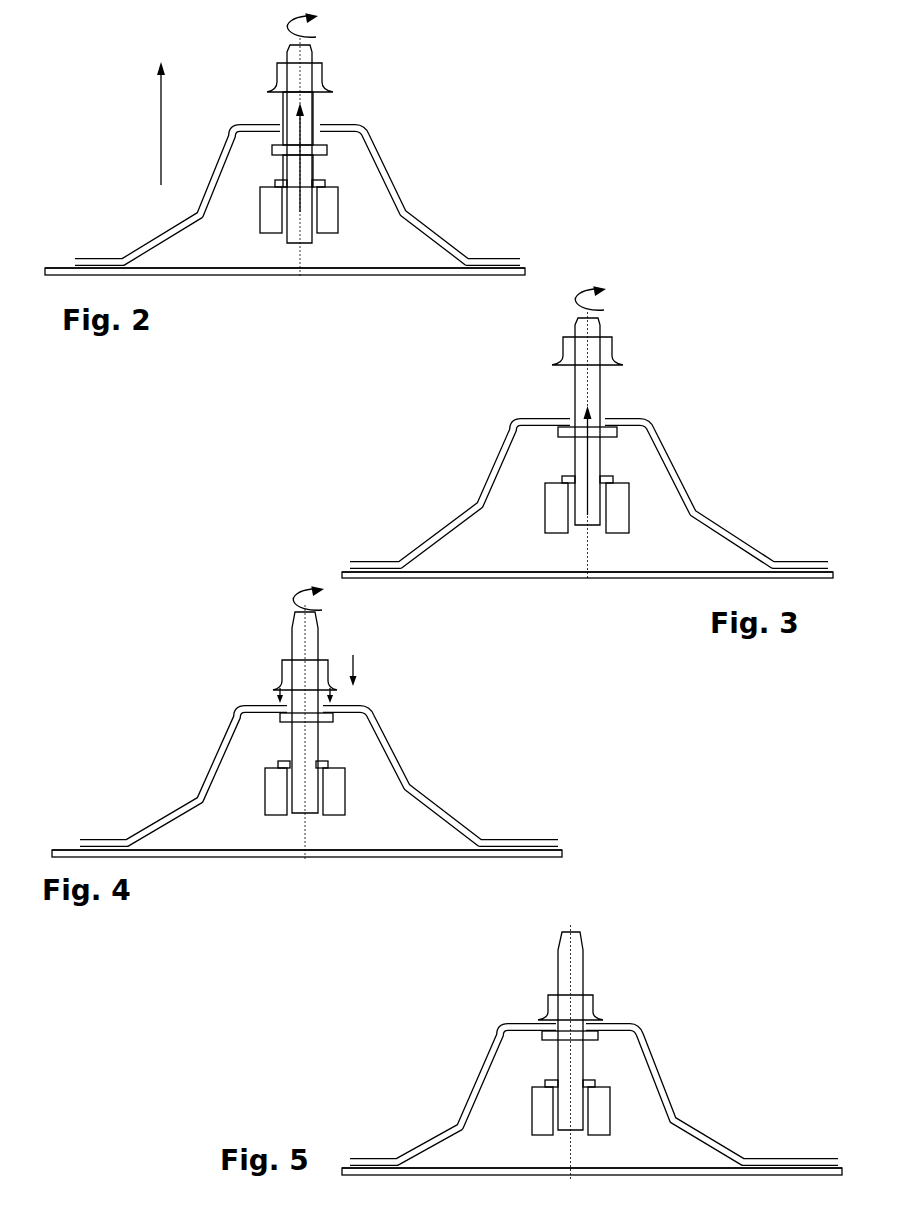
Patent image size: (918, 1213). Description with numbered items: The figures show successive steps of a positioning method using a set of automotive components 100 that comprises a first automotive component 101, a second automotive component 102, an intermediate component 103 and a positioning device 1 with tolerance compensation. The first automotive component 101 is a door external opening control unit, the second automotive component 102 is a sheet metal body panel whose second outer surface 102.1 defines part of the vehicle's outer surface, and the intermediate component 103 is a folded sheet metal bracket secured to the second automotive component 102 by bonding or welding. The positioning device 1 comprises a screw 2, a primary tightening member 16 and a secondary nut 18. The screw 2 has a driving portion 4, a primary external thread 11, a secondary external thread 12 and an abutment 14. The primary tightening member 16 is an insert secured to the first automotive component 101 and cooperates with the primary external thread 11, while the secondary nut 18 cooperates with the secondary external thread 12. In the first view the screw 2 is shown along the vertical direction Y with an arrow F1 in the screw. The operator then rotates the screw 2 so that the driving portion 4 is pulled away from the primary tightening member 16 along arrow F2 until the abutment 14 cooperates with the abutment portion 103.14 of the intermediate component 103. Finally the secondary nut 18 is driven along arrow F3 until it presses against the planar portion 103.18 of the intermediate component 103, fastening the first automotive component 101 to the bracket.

In FIG. 2, the positioning device with tolerance compensation 1 is at (366, 76).
In FIG. 3, the positioning device with tolerance compensation 1 is at (645, 403).
In FIG. 4, the positioning device with tolerance compensation 1 is at (368, 672).
In FIG. 5, the positioning device with tolerance compensation 1 is at (632, 988).
In FIG. 2, the screw 2 is at (310, 115).
In FIG. 3, the screw 2 is at (597, 385).
In FIG. 4, the screw 2 is at (310, 655).
In FIG. 5, the screw 2 is at (578, 968).
In FIG. 2, the driving portion 4 is at (306, 58).
In FIG. 2, the primary external thread 11 is at (283, 168).
In FIG. 2, the secondary external thread 12 is at (285, 108).
In FIG. 2, the abutment 14 is at (270, 151).
In FIG. 3, the abutment 14 is at (560, 437).
In FIG. 4, the abutment 14 is at (283, 722).
In FIG. 5, the abutment 14 is at (550, 1040).
In FIG. 2, the primary tightening member 16 is at (277, 183).
In FIG. 2, the secondary nut 18 is at (280, 78).
In FIG. 3, the secondary nut 18 is at (560, 365).
In FIG. 4, the secondary nut 18 is at (285, 672).
In FIG. 5, the secondary nut 18 is at (548, 1005).
In FIG. 2, the set of automotive components 100 is at (470, 92).
In FIG. 3, the set of automotive components 100 is at (712, 360).
In FIG. 4, the set of automotive components 100 is at (455, 645).
In FIG. 5, the set of automotive components 100 is at (724, 960).
In FIG. 2, the first automotive component 101 is at (330, 213).
In FIG. 3, the first automotive component 101 is at (615, 508).
In FIG. 4, the first automotive component 101 is at (335, 808).
In FIG. 5, the first automotive component 101 is at (600, 1110).
In FIG. 2, the second automotive component 102 is at (178, 276).
In FIG. 3, the second automotive component 102 is at (600, 578).
In FIG. 4, the second automotive component 102 is at (200, 858).
In FIG. 5, the second automotive component 102 is at (528, 1176).
In FIG. 2, the second outer surface 102.1 is at (245, 278).
In FIG. 3, the second outer surface 102.1 is at (668, 580).
In FIG. 4, the second outer surface 102.1 is at (268, 860).
In FIG. 5, the second outer surface 102.1 is at (605, 1178).
In FIG. 2, the intermediate component 103 is at (388, 174).
In FIG. 3, the intermediate component 103 is at (589, 472).
In FIG. 4, the intermediate component 103 is at (400, 773).
In FIG. 5, the intermediate component 103 is at (652, 1052).
In FIG. 2, the planar portion 103.18 is at (348, 120).
In FIG. 3, the planar portion 103.18 is at (537, 410).
In FIG. 4, the abutment portion 103.14 is at (350, 722).
In FIG. 2, the force F1 is at (300, 172).
In FIG. 3, the arrow F2 is at (590, 442).
In FIG. 4, the arrow F3 is at (278, 703).
In FIG. 2, the vertical axis Y is at (161, 108).